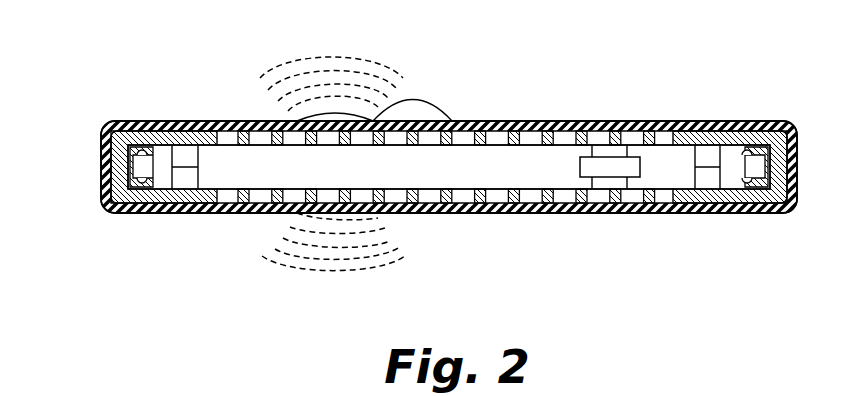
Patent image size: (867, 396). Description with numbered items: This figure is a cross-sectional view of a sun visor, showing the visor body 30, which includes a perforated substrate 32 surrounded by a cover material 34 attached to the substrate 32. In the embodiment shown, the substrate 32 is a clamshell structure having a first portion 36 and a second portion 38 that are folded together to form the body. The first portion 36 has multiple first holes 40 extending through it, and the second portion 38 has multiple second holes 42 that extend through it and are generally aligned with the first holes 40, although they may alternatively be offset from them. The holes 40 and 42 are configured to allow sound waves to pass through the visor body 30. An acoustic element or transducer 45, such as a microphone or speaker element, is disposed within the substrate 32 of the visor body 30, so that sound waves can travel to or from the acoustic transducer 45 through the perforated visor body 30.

The visor body 30 is at (95, 106).
The perforated substrate 32 is at (179, 121).
The cover material 34 is at (223, 121).
The first portion 36 is at (500, 121).
The second portion 38 is at (483, 213).
The first holes 40 is at (424, 121).
The second holes 42 is at (288, 213).
The acoustic transducer 45 is at (628, 150).